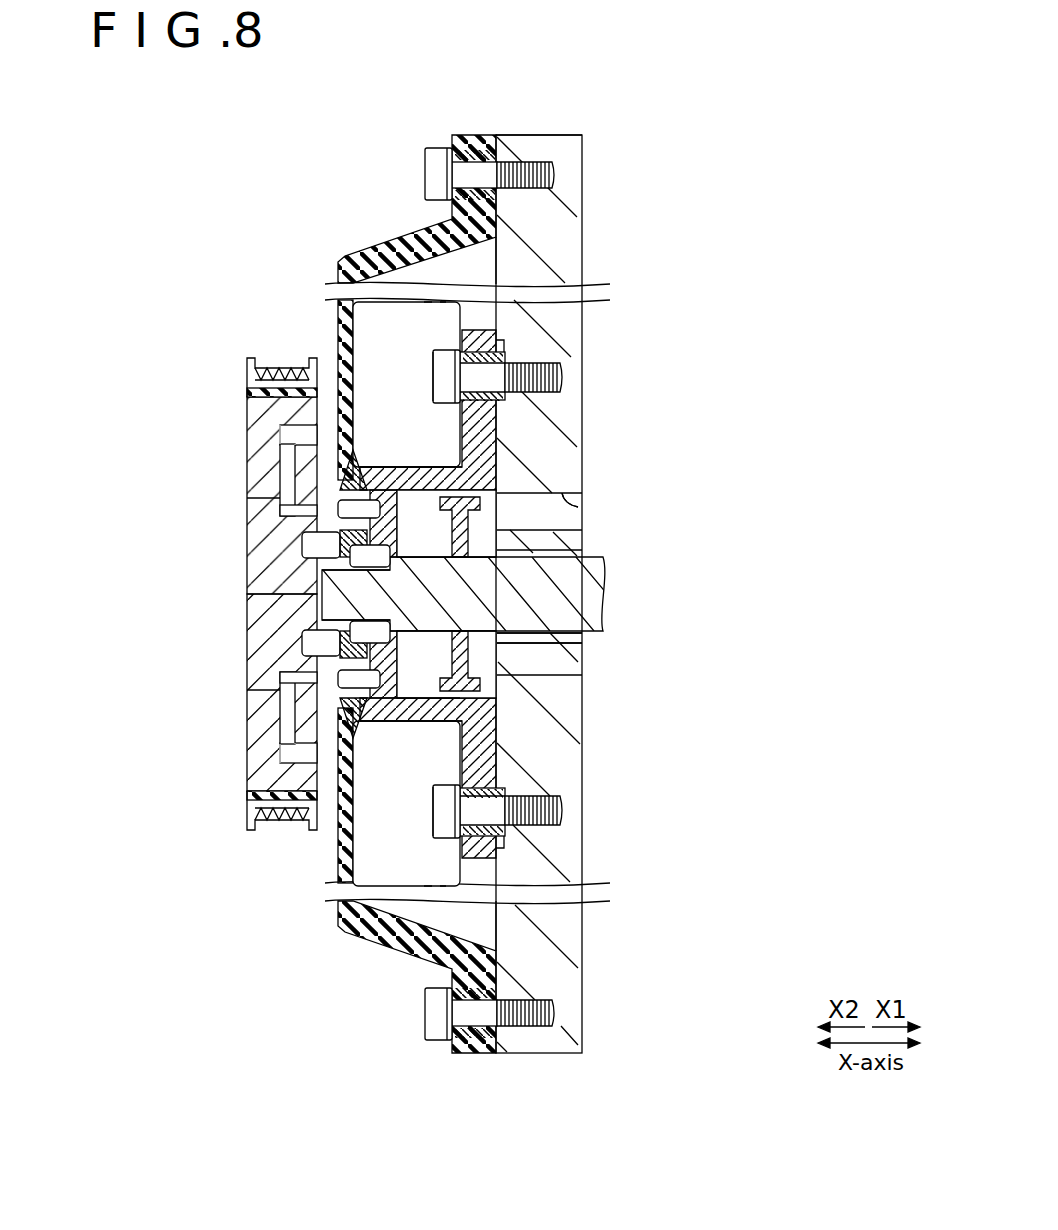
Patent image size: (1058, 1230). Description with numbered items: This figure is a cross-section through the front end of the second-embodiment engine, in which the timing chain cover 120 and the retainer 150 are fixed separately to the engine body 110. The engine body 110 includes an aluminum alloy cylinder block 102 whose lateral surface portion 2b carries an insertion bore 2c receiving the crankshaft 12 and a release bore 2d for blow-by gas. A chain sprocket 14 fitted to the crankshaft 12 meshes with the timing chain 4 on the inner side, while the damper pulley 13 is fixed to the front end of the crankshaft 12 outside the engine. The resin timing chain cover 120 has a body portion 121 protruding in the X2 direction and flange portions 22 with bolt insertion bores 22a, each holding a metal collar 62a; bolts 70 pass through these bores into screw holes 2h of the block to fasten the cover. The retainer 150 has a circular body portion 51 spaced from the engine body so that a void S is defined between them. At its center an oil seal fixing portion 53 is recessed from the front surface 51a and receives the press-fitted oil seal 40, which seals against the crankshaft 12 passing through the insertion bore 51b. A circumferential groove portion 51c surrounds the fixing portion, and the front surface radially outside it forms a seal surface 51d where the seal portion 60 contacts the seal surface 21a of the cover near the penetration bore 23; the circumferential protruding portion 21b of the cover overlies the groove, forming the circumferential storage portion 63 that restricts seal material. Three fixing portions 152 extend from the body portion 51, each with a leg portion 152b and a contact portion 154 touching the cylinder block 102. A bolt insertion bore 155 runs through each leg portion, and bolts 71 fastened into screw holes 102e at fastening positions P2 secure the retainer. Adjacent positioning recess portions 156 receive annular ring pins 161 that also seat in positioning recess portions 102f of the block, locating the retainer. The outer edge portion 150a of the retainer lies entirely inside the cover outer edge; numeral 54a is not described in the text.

The engine body 110 is at (610, 143).
The collar 62a is at (540, 148).
The screw hole 2h is at (556, 175).
The flange portion 22 is at (500, 222).
The lateral surface portion 2b is at (662, 594).
The cylinder block 102 is at (540, 262).
The through hole 54a is at (500, 345).
The ring pin 161 is at (515, 360).
The screw hole 102e is at (558, 378).
The contact portion 154 is at (498, 420).
The body portion 51 is at (450, 470).
The release bore 2d is at (583, 510).
The insertion bore 51b is at (500, 480).
The crankshaft 12 is at (606, 590).
The insertion bore 2c is at (565, 628).
The chain sprocket 14 is at (560, 647).
The timing chain 4 is at (560, 673).
The void S is at (483, 703).
The outer edge portion 150a is at (678, 594).
The retainer 150 is at (520, 905).
The bolt insertion bore 22a is at (453, 157).
The bolt 70 is at (440, 180).
The positioning recess portion 156 is at (428, 328).
The positioning recess portion 102f is at (477, 348).
The fastening position P2 is at (432, 342).
The leg portion 152b is at (443, 378).
The fixing portion 152 is at (400, 443).
The bolt insertion bore 155 is at (439, 380).
The bolt 71 is at (345, 360).
The body portion 121 is at (170, 594).
The timing chain cover 120 is at (318, 378).
The seal surface 51d is at (186, 561).
The front surface 51a is at (330, 470).
The circumferential groove portion 51c is at (214, 594).
The circumferential storage portion 63 is at (340, 503).
The oil seal 40 is at (340, 540).
The oil seal fixing portion 53 is at (335, 575).
The damper pulley 13 is at (265, 630).
The penetration bore 23 is at (317, 673).
The circumferential protruding portion 21b is at (250, 672).
The seal surface 21a is at (405, 710).
The seal portion 60 is at (250, 700).